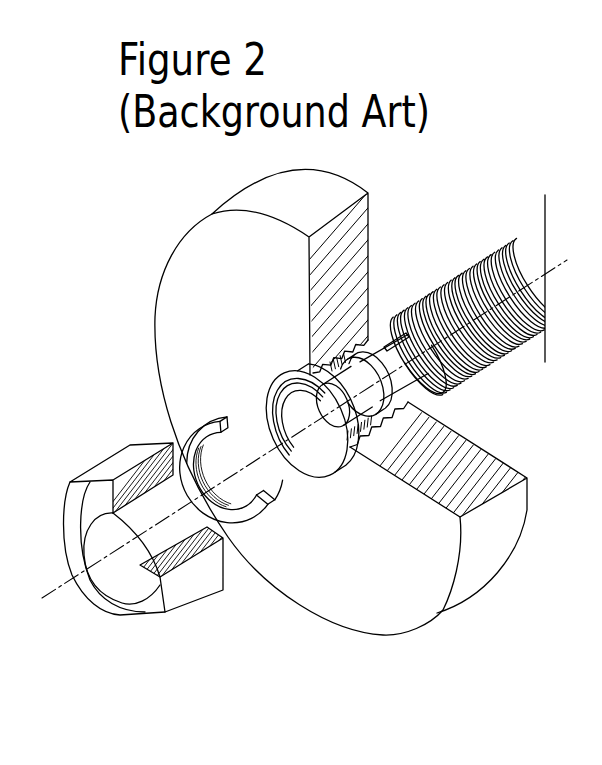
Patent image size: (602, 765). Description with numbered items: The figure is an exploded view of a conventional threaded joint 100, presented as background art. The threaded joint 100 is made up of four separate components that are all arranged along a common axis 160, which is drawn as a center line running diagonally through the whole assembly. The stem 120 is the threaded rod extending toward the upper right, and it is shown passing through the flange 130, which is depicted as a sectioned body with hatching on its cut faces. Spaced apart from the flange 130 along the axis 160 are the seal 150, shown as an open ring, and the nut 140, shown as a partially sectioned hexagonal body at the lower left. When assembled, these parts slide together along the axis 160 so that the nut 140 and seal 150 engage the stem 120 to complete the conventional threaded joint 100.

The threaded joint 100 is at (163, 186).
The stem 120 is at (452, 279).
The flange 130 is at (310, 193).
The nut 140 is at (108, 467).
The seal 150 is at (252, 527).
The axis 160 is at (63, 587).